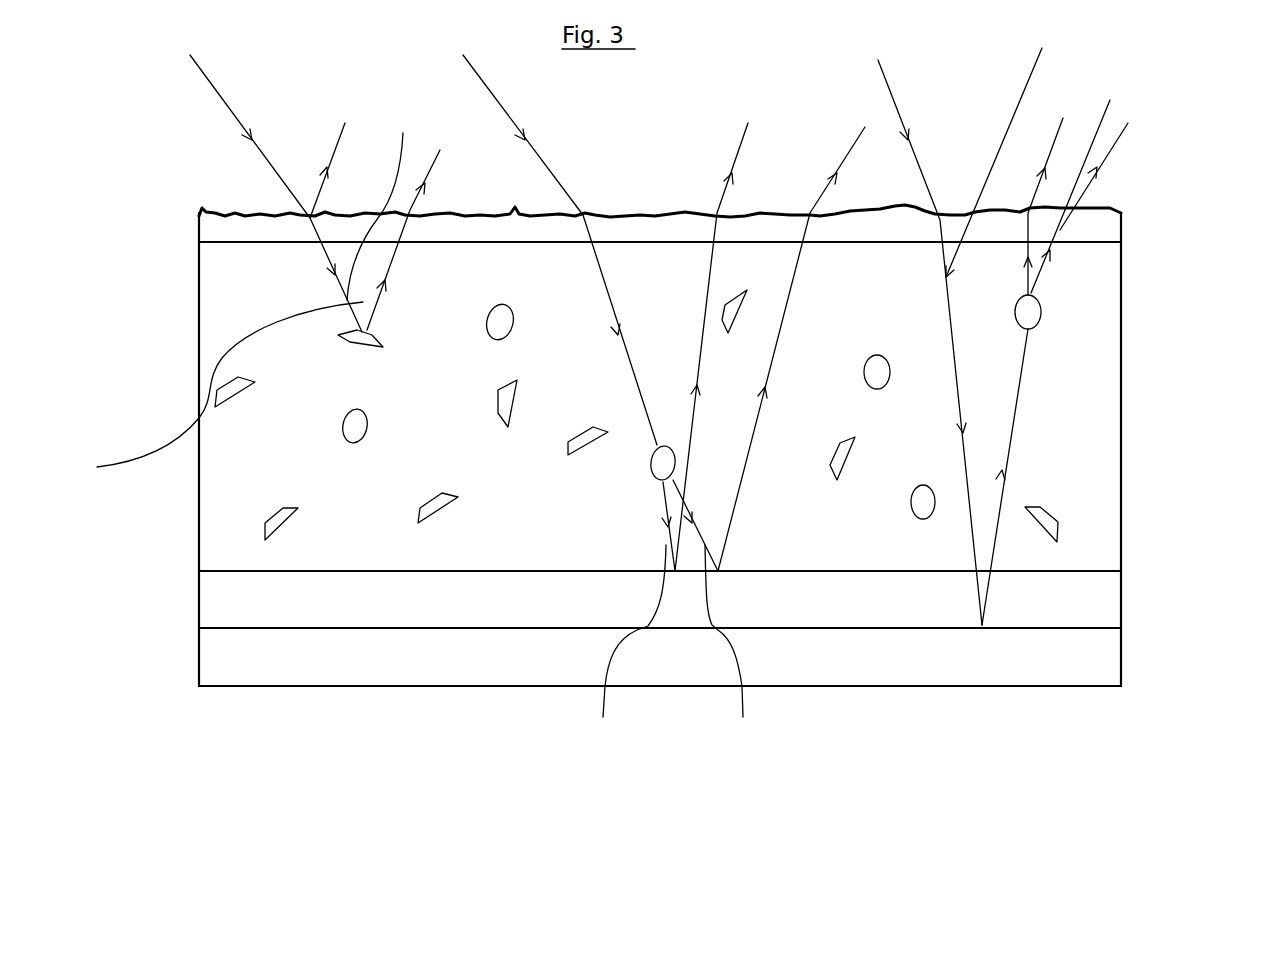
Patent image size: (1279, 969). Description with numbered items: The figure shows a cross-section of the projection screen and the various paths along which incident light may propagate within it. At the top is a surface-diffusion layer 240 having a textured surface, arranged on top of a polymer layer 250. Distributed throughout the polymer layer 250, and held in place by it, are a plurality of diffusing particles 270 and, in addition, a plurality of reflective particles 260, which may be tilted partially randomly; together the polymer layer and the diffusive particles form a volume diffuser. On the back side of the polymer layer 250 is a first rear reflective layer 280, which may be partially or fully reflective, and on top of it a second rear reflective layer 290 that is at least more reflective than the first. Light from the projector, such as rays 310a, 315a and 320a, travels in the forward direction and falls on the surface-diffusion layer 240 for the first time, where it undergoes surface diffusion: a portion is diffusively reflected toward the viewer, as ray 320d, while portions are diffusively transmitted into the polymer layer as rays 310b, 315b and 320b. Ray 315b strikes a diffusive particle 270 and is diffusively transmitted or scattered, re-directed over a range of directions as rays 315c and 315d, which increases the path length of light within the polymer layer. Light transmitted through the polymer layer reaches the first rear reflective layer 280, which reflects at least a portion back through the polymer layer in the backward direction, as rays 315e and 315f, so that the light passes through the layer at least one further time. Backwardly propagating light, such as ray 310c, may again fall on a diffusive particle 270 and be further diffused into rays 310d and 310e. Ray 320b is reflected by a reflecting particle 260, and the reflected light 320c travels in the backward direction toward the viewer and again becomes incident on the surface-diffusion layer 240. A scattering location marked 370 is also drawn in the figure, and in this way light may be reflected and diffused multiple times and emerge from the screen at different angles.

The surface-diffusion layer 240 is at (1110, 228).
The polymer layer 250 is at (1092, 480).
The reflective particles 260 is at (1060, 518).
The diffusing particles 270 is at (880, 372).
The first rear reflective layer 280 is at (1092, 606).
The second rear reflective layer 290 is at (1110, 657).
The light ray 310a is at (897, 103).
The light ray 310b is at (1015, 148).
The light ray 310c is at (1015, 405).
The light ray 310d is at (1088, 182).
The light ray 310e is at (412, 210).
The light ray 315a is at (502, 95).
The light ray 315b is at (608, 300).
The light ray 315c is at (620, 651).
The light ray 315d is at (752, 651).
The light ray 315e is at (704, 313).
The light ray 315f is at (794, 265).
The light ray 320a is at (222, 100).
The light ray 320b is at (396, 204).
The light ray 320c is at (210, 384).
The light ray 320d is at (325, 160).
The scattering particle 370 is at (662, 462).